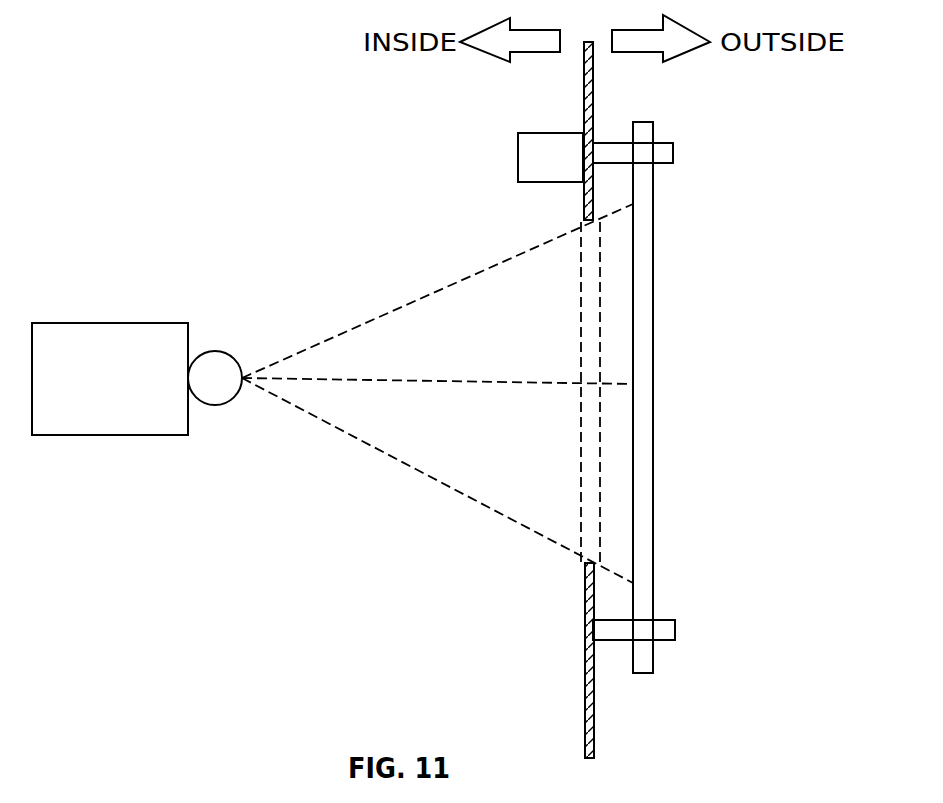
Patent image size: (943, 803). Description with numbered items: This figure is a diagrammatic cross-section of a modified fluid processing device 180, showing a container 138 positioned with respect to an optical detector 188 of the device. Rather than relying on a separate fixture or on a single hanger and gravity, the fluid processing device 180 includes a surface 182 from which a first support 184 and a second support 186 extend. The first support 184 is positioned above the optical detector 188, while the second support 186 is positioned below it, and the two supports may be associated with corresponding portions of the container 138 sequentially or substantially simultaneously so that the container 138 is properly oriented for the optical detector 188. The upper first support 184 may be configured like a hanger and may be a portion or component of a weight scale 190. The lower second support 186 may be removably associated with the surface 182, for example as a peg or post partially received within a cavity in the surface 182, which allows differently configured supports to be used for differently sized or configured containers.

The container 138 is at (643, 222).
The fluid processing device 180 is at (622, 728).
The surface 182 is at (583, 67).
The first support 184 is at (609, 152).
The second support 186 is at (675, 628).
The optical detector 188 is at (118, 415).
The weight scale 190 is at (575, 169).